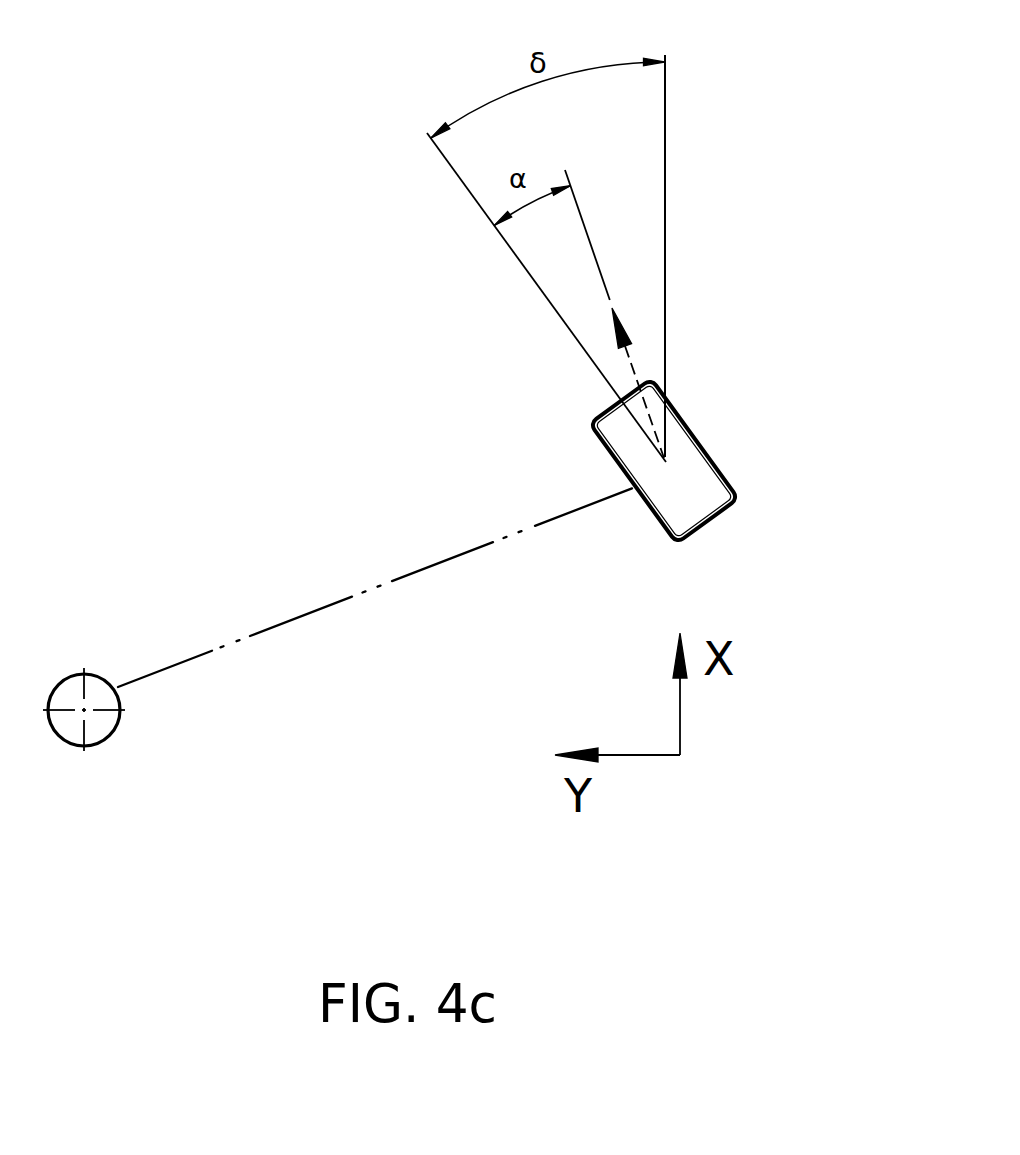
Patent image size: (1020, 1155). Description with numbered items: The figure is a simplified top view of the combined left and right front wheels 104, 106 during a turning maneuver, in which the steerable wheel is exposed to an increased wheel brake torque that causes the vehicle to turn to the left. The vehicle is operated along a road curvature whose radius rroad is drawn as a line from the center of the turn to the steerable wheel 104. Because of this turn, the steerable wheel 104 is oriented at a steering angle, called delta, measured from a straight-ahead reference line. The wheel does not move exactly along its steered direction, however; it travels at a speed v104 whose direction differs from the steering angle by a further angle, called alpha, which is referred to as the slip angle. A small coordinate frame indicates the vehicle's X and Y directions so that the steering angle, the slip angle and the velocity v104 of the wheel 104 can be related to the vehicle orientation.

The left steerable wheel 104 is at (700, 437).
The right steerable wheel 106 is at (700, 437).
The speed of the steerable wheel v104 is at (635, 372).
The road curvature radius rroad is at (306, 612).